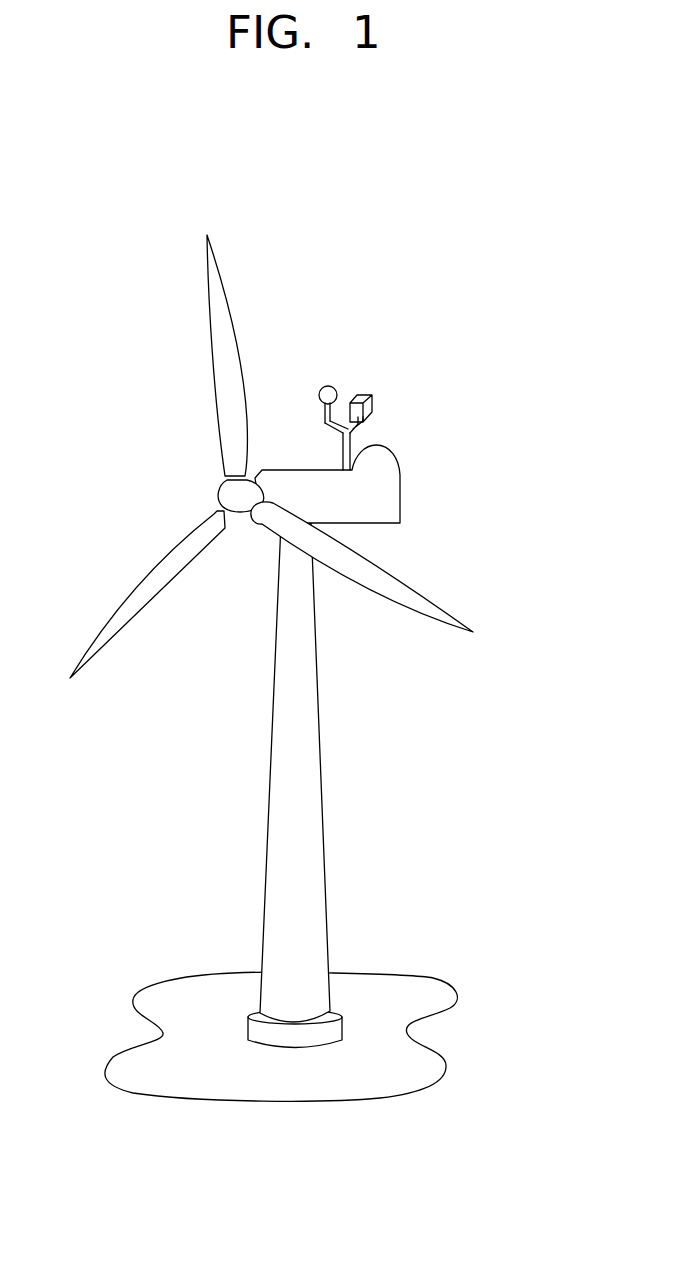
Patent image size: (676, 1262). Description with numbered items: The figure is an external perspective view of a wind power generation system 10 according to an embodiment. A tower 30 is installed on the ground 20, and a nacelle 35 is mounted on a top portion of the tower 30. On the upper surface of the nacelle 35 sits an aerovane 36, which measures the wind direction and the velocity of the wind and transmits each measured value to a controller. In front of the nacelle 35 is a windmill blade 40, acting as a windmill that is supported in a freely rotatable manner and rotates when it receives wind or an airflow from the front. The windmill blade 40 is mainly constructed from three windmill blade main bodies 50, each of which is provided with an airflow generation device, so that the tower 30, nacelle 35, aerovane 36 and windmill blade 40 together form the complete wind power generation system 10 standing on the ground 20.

The wind power generation system 10 is at (448, 302).
The ground 20 is at (367, 988).
The tower 30 is at (312, 840).
The nacelle 35 is at (387, 498).
The aerovane 36 is at (333, 422).
The windmill blade 40 is at (138, 457).
The windmill blade main body 50 is at (217, 263).